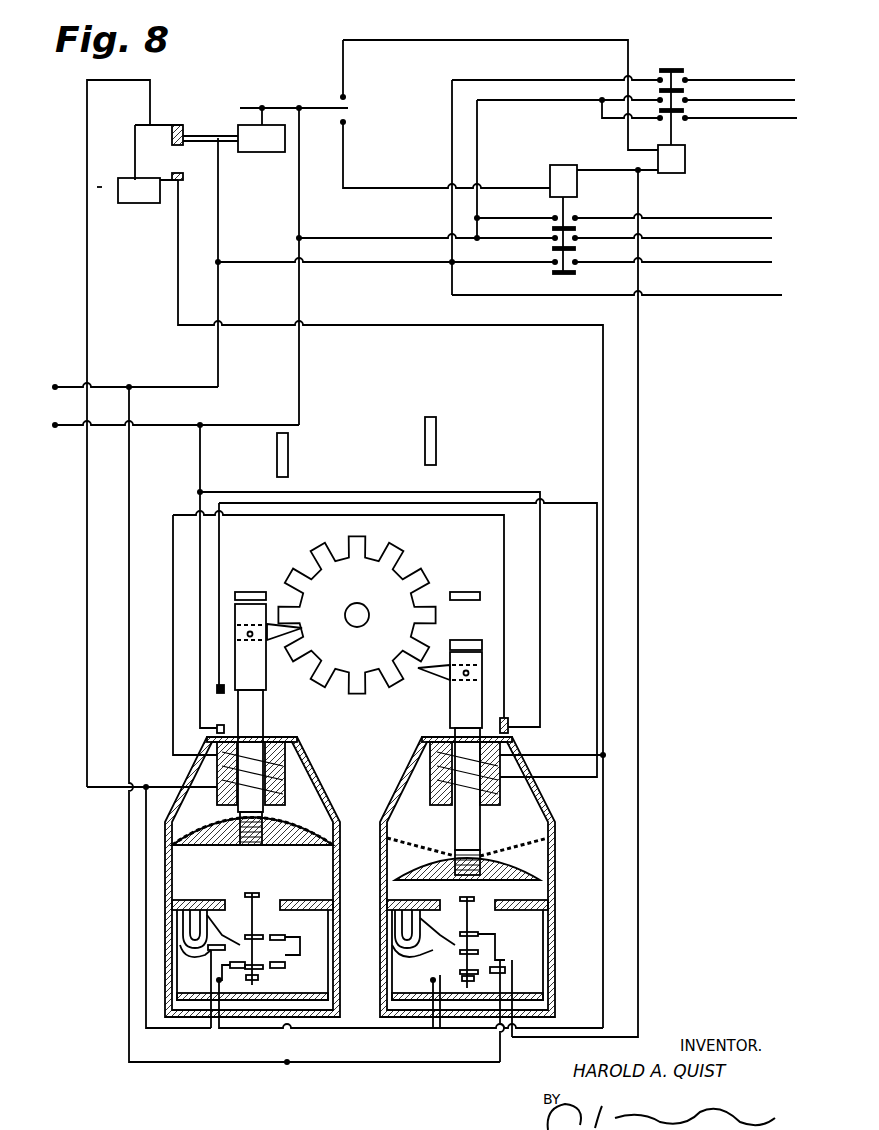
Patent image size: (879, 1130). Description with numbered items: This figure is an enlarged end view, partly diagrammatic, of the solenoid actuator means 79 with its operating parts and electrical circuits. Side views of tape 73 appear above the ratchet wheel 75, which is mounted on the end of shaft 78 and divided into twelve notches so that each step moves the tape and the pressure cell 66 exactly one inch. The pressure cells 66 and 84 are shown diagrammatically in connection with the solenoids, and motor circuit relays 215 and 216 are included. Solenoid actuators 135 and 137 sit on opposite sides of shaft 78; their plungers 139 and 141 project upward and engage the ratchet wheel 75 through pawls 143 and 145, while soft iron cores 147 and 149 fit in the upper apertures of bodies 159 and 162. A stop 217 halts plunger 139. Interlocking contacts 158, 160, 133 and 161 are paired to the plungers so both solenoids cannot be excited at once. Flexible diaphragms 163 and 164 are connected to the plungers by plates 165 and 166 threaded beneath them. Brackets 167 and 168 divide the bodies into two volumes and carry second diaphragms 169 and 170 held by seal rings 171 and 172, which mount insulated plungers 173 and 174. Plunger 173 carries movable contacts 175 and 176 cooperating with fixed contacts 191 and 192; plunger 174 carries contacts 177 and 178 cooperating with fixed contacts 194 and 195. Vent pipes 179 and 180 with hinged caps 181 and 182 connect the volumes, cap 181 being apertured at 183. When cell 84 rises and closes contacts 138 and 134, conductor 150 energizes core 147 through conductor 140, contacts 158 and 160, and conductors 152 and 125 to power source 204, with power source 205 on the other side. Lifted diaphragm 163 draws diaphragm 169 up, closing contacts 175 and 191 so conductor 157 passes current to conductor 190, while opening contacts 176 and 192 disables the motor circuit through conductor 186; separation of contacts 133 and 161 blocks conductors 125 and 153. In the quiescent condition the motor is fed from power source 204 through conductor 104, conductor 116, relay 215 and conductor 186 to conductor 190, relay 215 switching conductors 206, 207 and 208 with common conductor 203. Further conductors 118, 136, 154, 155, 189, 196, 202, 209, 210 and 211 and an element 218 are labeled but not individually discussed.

The pressure cell 66 is at (137, 213).
The tape 73 is at (289, 446).
The ratchet wheel 75 is at (377, 656).
The shaft 78 is at (369, 615).
The solenoid actuator means 79 is at (118, 835).
The pressure cell 84 is at (275, 160).
The conductor 104 is at (300, 214).
The conductor 116 is at (530, 42).
The conductor 118 is at (348, 186).
The conductor 125 is at (199, 488).
The interlocking contact 133 is at (216, 689).
The contact 134 is at (198, 117).
The solenoid actuator 135 is at (156, 893).
The conductor 136 is at (210, 151).
The solenoid actuator 137 is at (561, 965).
The contact 138 is at (172, 142).
The plunger 139 is at (264, 718).
The conductor 140 is at (173, 704).
The plunger 141 is at (456, 712).
The pawl 143 is at (272, 670).
The pawl 145 is at (428, 676).
The soft iron core 147 is at (286, 741).
The soft iron core 149 is at (432, 741).
The conductor 150 is at (85, 252).
The conductor 152 is at (542, 592).
The conductor 153 is at (266, 502).
The conductor 154 is at (219, 226).
The conductor 155 is at (641, 869).
The conductor 157 is at (185, 1036).
The interlocking contact 158 is at (506, 717).
The body 159 is at (312, 790).
The interlocking contact 160 is at (510, 732).
The interlocking contact 161 is at (216, 729).
The body 162 is at (547, 810).
The flexible diaphragm 163 is at (290, 836).
The flexible diaphragm 164 is at (504, 838).
The plate 165 is at (281, 849).
The plate 166 is at (535, 873).
The bracket 167 is at (322, 900).
The bracket 168 is at (416, 904).
The second diaphragm 169 is at (264, 906).
The second diaphragm 170 is at (480, 906).
The seal ring 171 is at (226, 904).
The seal ring 172 is at (556, 896).
The insulated plunger 173 is at (252, 892).
The insulated plunger 174 is at (466, 900).
The movable contact 175 is at (263, 965).
The movable contact 176 is at (236, 965).
The movable contact 177 is at (465, 969).
The movable contact 178 is at (473, 951).
The bleeder pipe 179 is at (190, 942).
The pipe 180 is at (412, 942).
The hinged cap 181 is at (210, 908).
The hinged cap 182 is at (428, 908).
The aperture 183 is at (215, 921).
The conductor 186 is at (640, 493).
The conductor 189 is at (178, 254).
The conductor 190 is at (131, 522).
The fixed contact 191 is at (262, 935).
The fixed contact 192 is at (260, 978).
The fixed contact 194 is at (472, 933).
The fixed contact 195 is at (470, 979).
The conductor 196 is at (452, 124).
The conductor 202 is at (342, 1032).
The common conductor 203 is at (760, 298).
The power source 204 is at (55, 428).
The power source 205 is at (60, 382).
The conductor 206 is at (735, 84).
The conductor 207 is at (742, 104).
The conductor 208 is at (747, 120).
The conductor 209 is at (731, 219).
The conductor 210 is at (736, 240).
The conductor 211 is at (758, 264).
The motor circuit relay 215 is at (686, 163).
The motor circuit relay 216 is at (563, 165).
The stop 217 is at (258, 583).
The stop 218 is at (465, 592).